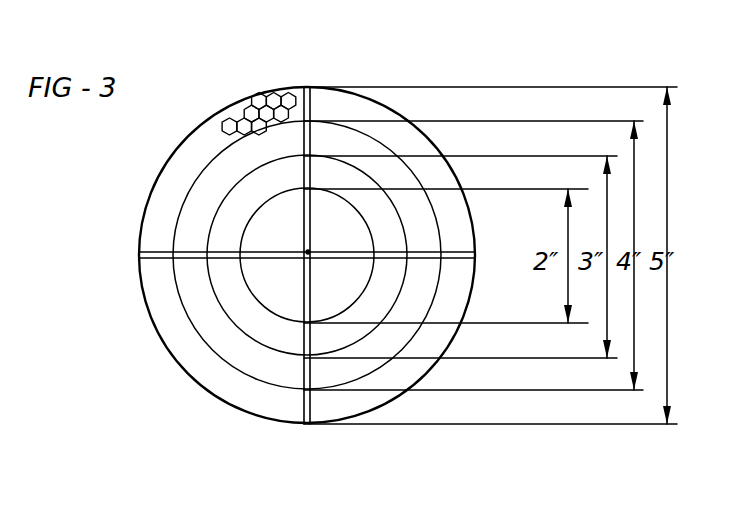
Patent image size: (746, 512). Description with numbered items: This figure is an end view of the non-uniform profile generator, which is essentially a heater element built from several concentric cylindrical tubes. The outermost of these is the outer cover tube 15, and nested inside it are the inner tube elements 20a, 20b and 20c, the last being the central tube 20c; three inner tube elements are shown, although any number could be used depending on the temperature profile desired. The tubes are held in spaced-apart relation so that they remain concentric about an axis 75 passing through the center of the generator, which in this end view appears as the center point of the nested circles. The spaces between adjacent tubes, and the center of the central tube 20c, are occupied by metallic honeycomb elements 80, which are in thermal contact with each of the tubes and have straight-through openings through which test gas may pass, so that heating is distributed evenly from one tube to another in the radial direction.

The outer cover tube 15 is at (162, 340).
The inner tube element 20a is at (213, 353).
The inner tube element 20b is at (270, 353).
The central tube 20c is at (292, 323).
The axis 75 is at (308, 252).
The metallic honeycomb elements 80 is at (252, 110).